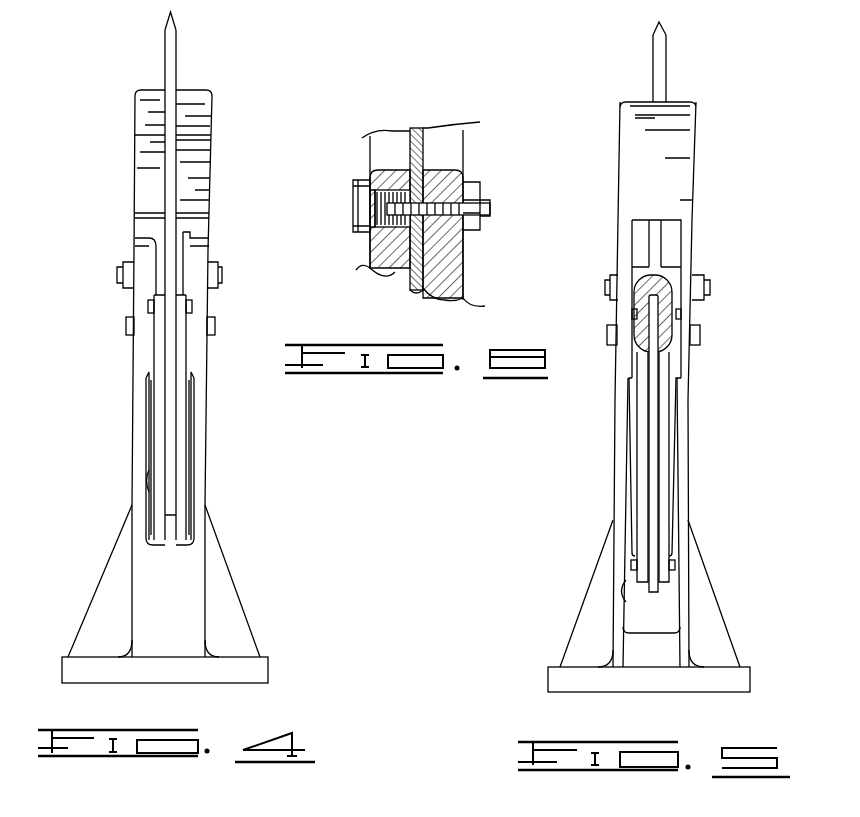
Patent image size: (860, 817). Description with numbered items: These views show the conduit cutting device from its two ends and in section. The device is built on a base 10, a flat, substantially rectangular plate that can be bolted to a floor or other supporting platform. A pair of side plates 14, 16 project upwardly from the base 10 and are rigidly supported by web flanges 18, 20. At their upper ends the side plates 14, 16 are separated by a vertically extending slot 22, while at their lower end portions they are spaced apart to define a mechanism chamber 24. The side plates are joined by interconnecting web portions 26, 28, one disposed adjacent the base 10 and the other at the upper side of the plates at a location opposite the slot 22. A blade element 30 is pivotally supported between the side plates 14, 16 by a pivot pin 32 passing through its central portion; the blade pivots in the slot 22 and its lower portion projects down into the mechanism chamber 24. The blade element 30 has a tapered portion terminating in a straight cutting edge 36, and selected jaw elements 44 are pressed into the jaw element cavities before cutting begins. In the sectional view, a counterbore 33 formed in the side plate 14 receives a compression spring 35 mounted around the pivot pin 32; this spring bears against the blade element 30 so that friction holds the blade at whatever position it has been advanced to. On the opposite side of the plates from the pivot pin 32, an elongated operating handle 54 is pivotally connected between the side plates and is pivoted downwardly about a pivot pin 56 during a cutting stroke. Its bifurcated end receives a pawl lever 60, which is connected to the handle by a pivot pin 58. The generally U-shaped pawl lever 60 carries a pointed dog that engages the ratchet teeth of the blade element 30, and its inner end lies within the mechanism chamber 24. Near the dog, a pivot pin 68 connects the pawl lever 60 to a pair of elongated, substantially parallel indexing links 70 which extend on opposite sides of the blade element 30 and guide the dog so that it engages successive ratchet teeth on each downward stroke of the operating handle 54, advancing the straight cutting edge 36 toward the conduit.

In FIG. 4, the base 10 is at (258, 672).
In FIG. 5, the base 10 is at (740, 685).
In FIG. 4, the side plate 14 is at (200, 416).
In FIG. 9, the side plate 14 is at (395, 274).
In FIG. 5, the side plate 14 is at (626, 368).
In FIG. 4, the side plate 16 is at (146, 410).
In FIG. 9, the side plate 16 is at (445, 302).
In FIG. 5, the side plate 16 is at (685, 371).
In FIG. 4, the web flange 18 is at (235, 634).
In FIG. 5, the web flange 18 is at (600, 661).
In FIG. 4, the web flange 20 is at (115, 634).
In FIG. 5, the web flange 20 is at (718, 624).
In FIG. 4, the slot 22 is at (141, 225).
In FIG. 4, the mechanism chamber 24 is at (148, 483).
In FIG. 5, the mechanism chamber 24 is at (675, 412).
In FIG. 4, the web portion 26 is at (176, 634).
In FIG. 5, the web portion 26 is at (670, 648).
In FIG. 5, the web portion 28 is at (668, 188).
In FIG. 4, the blade element 30 is at (174, 62).
In FIG. 9, the blade element 30 is at (418, 124).
In FIG. 4, the pivot pin 32 is at (222, 273).
In FIG. 9, the pivot pin 32 is at (490, 207).
In FIG. 5, the pivot pin 32 is at (614, 275).
In FIG. 9, the counterbore 33 is at (376, 173).
In FIG. 9, the compression spring 35 is at (372, 252).
In FIG. 5, the straight cutting edge 36 is at (665, 60).
In FIG. 4, the jaw elements 44 is at (136, 176).
In FIG. 5, the operating handle 54 is at (665, 282).
In FIG. 4, the pivot pin 56 is at (215, 331).
In FIG. 5, the pivot pin 56 is at (700, 331).
In FIG. 5, the pivot pin 58 is at (633, 313).
In FIG. 5, the pawl lever 60 is at (650, 419).
In FIG. 5, the pivot pin 68 is at (632, 563).
In FIG. 4, the indexing links 70 is at (160, 358).
In FIG. 5, the indexing links 70 is at (643, 461).